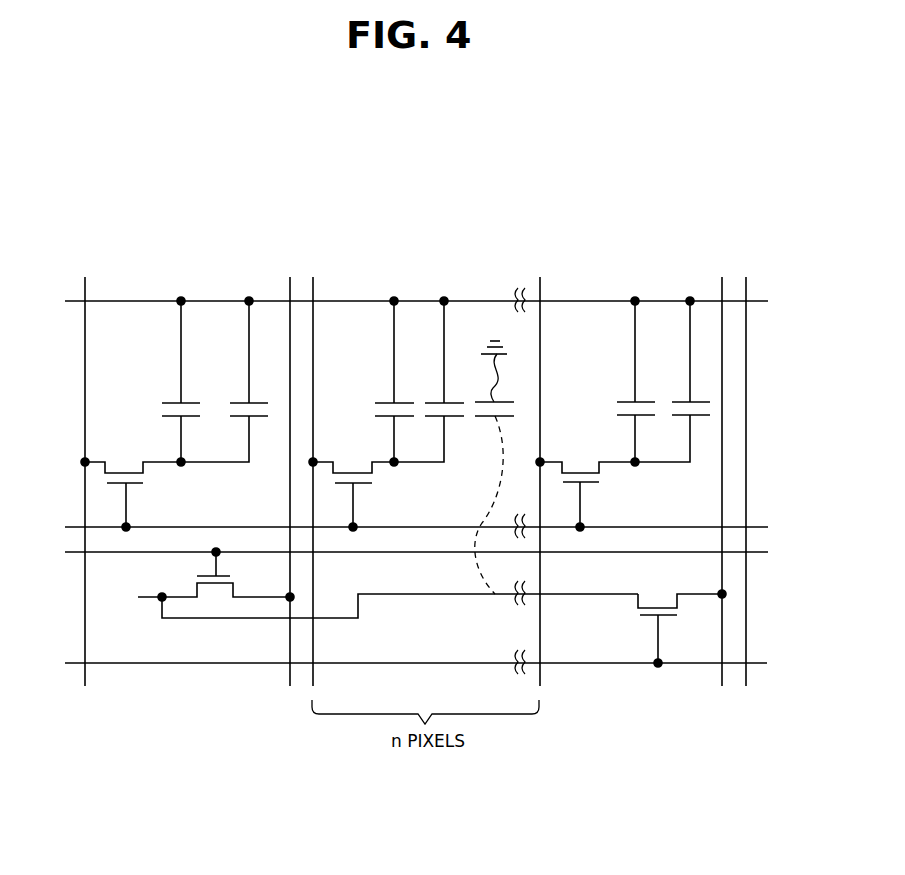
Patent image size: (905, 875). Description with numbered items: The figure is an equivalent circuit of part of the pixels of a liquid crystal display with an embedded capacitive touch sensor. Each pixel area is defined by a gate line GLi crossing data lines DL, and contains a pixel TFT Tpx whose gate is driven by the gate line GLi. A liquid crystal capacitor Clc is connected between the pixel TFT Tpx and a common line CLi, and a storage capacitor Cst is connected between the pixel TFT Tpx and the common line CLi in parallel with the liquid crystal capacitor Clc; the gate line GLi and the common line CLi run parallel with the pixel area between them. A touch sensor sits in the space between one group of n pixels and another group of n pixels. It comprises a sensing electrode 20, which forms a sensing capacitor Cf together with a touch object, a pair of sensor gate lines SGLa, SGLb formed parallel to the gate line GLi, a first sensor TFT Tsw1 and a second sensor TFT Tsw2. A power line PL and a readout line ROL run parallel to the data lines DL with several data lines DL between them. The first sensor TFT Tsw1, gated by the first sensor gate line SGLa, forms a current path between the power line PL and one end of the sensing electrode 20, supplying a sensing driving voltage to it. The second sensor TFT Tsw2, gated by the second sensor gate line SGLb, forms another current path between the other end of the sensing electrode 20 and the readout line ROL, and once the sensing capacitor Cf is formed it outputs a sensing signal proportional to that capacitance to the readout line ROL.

The sensing electrode 20 is at (398, 594).
The data line DL is at (424, 468).
The power line PL is at (290, 290).
The readout line ROL is at (722, 468).
The common line CLi is at (431, 299).
The gate line GLi is at (400, 526).
The first sensor gate line SGLa is at (391, 551).
The second sensor gate line SGLb is at (439, 662).
The pixel TFT Tpx is at (131, 484).
The liquid crystal capacitor Clc is at (187, 381).
The storage capacitor Cst is at (231, 379).
The sensing capacitor Cf is at (491, 467).
The first sensor TFT Tsw1 is at (216, 574).
The second sensor TFT Tsw2 is at (682, 618).